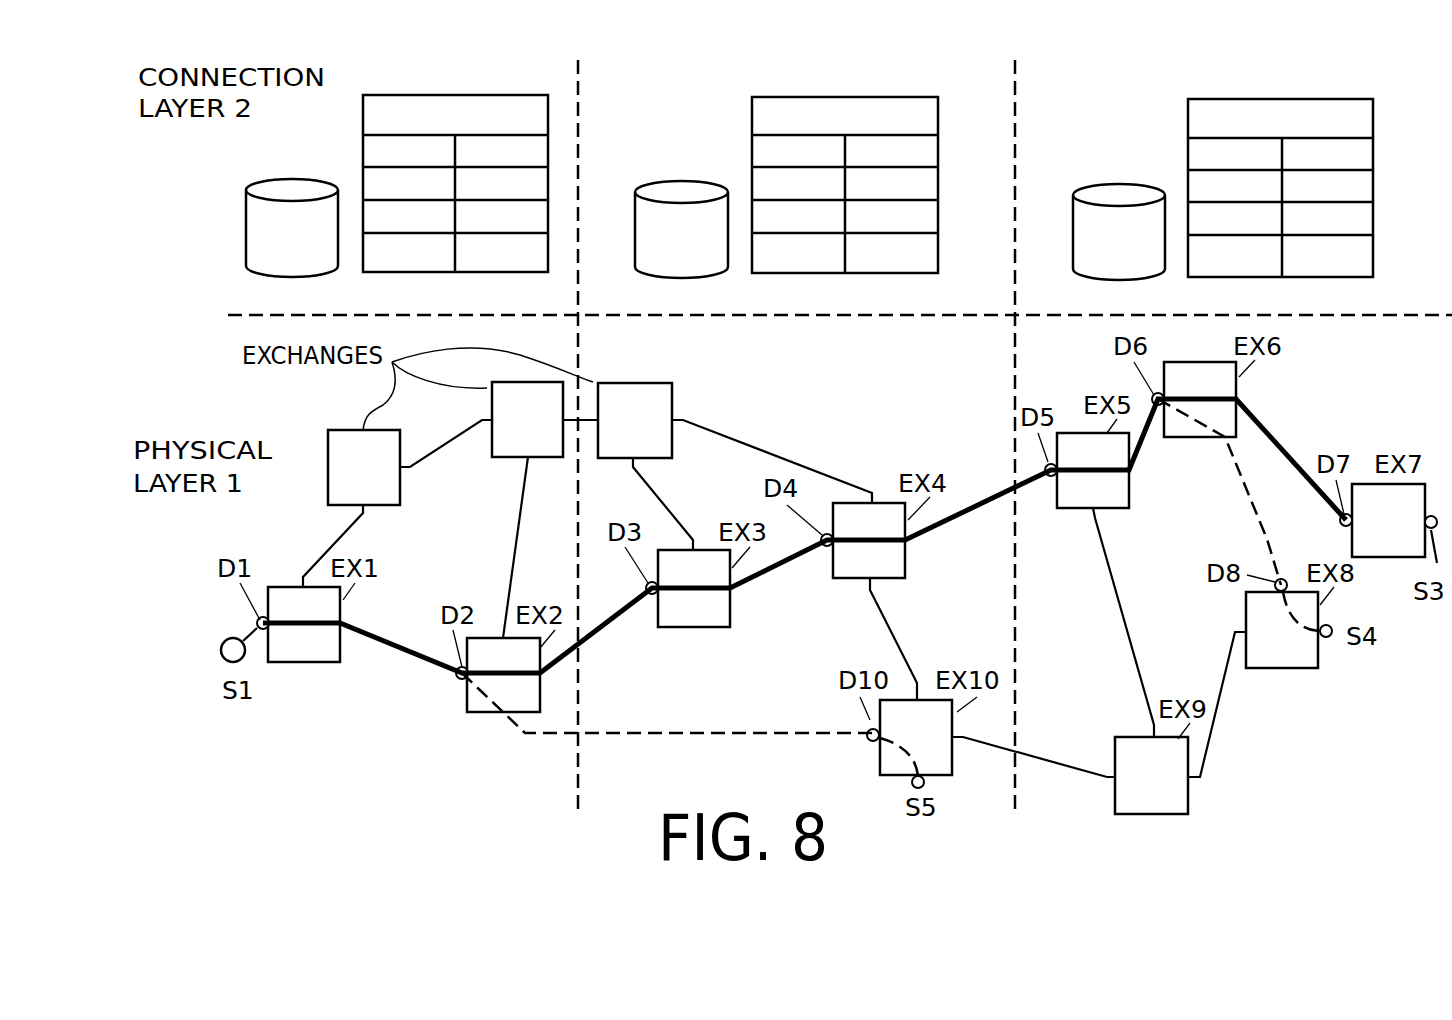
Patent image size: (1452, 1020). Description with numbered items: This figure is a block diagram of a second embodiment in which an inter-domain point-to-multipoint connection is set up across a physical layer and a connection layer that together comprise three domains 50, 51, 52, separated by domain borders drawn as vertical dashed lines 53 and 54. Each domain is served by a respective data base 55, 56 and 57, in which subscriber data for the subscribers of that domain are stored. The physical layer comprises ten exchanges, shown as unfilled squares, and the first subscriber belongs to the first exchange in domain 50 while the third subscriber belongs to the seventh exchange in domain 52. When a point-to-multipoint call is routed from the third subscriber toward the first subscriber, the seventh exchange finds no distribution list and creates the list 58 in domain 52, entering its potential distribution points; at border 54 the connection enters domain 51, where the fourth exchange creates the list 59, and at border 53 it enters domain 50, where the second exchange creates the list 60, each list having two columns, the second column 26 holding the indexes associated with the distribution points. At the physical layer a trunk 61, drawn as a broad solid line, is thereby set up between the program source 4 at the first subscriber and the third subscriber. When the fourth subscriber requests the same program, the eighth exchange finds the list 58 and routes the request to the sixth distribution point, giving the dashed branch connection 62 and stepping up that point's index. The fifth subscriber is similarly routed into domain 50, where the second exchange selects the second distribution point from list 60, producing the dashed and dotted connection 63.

The program source 4 is at (230, 637).
The column of DIST-FROM-S1 list 26 is at (837, 206).
The domain 50 is at (467, 67).
The domain 51 is at (859, 67).
The domain 52 is at (1296, 71).
The domain border 53 is at (580, 100).
The domain border 54 is at (1017, 100).
The data base 55 is at (300, 187).
The data base 56 is at (688, 187).
The data base 57 is at (1127, 190).
The DIST-FROM-S1 list 58 is at (1188, 148).
The DIST-FROM-S1 list 59 is at (752, 147).
The DIST-FROM-S1 list 60 is at (362, 147).
The trunk 61 is at (393, 645).
The connection 62 is at (1263, 539).
The connection 63 is at (718, 733).